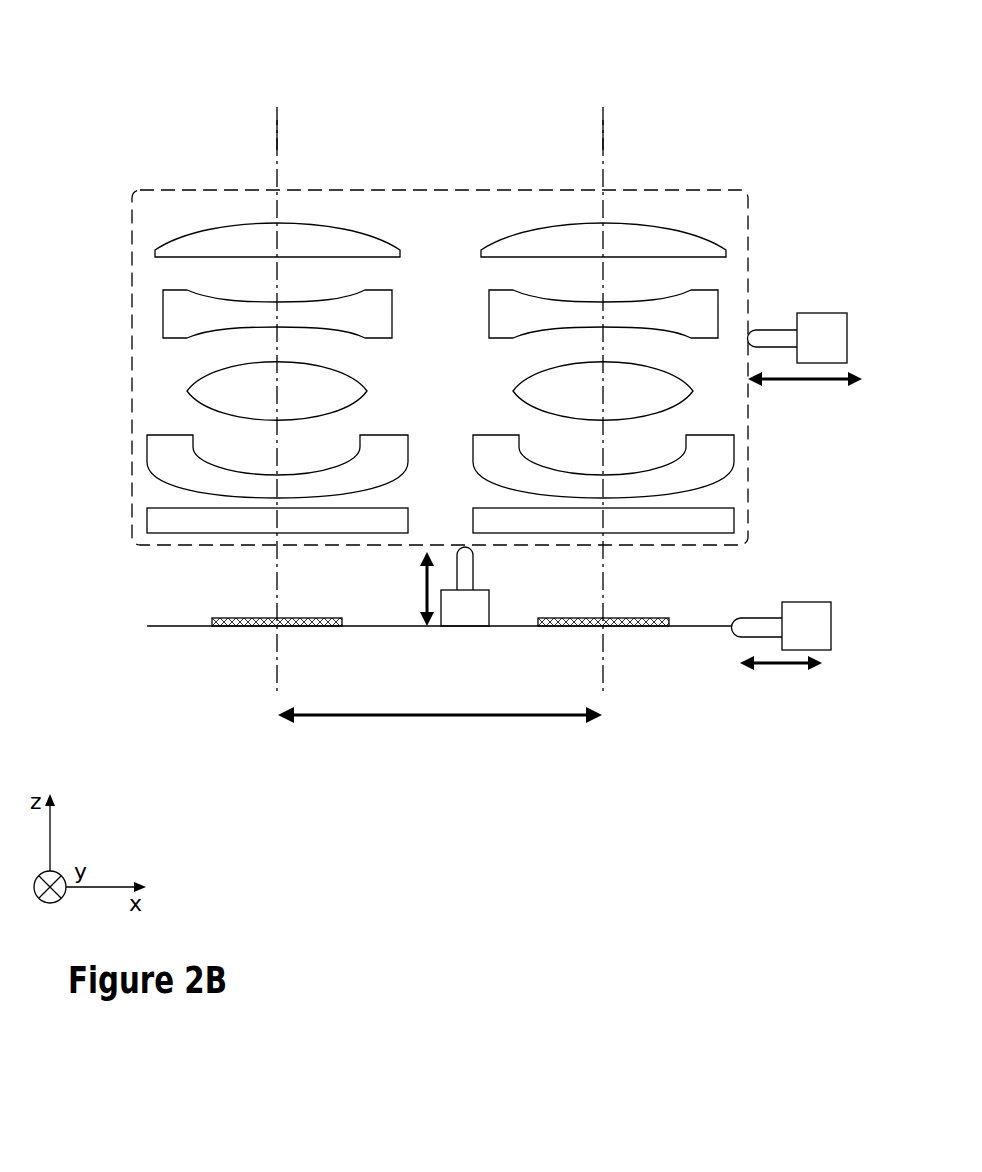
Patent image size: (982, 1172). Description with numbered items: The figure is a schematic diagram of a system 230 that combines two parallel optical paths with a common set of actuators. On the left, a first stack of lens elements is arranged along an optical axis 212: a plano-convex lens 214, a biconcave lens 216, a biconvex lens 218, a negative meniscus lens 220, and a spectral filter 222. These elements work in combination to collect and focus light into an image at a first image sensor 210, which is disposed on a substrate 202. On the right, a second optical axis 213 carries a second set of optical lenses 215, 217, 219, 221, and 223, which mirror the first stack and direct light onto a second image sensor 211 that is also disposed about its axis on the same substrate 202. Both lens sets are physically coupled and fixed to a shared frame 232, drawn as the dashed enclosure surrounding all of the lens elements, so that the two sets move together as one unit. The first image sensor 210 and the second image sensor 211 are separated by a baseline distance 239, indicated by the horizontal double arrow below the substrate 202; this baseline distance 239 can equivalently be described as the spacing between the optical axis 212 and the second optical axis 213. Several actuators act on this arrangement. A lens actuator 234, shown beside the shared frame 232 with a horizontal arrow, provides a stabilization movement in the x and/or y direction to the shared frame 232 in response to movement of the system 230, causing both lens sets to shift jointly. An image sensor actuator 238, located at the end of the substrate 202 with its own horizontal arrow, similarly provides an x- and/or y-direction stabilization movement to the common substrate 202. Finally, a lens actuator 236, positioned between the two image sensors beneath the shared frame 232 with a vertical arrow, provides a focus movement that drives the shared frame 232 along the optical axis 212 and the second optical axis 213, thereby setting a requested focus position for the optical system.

The substrate 202 is at (370, 628).
The first image sensor 210 is at (212, 618).
The second image sensor 211 is at (669, 618).
The optical axis 212 is at (277, 135).
The second optical axis 213 is at (603, 135).
The plano-convex lens 214 is at (155, 253).
The optical lens 215 is at (725, 253).
The biconcave lens 216 is at (163, 308).
The optical lens 217 is at (717, 308).
The biconvex lens 218 is at (187, 391).
The optical lens 219 is at (693, 391).
The negative meniscus lens 220 is at (147, 453).
The optical lens 221 is at (734, 465).
The spectral filter 222 is at (147, 520).
The optical lens 223 is at (734, 521).
The system 230 is at (391, 52).
The shared frame 232 is at (395, 190).
The lens actuator 234 is at (842, 313).
The lens actuator 236 is at (467, 618).
The image sensor actuator 238 is at (818, 602).
The baseline distance 239 is at (413, 720).